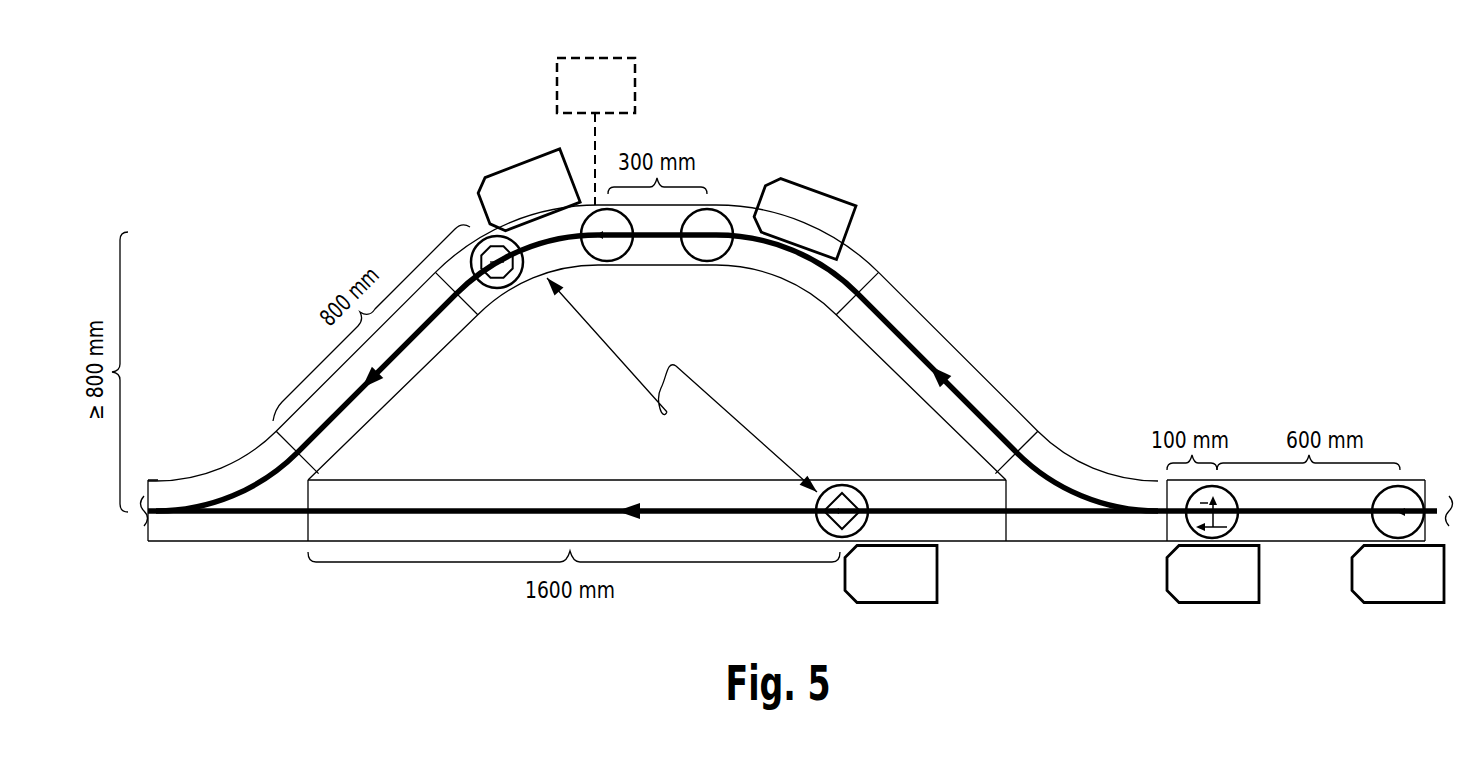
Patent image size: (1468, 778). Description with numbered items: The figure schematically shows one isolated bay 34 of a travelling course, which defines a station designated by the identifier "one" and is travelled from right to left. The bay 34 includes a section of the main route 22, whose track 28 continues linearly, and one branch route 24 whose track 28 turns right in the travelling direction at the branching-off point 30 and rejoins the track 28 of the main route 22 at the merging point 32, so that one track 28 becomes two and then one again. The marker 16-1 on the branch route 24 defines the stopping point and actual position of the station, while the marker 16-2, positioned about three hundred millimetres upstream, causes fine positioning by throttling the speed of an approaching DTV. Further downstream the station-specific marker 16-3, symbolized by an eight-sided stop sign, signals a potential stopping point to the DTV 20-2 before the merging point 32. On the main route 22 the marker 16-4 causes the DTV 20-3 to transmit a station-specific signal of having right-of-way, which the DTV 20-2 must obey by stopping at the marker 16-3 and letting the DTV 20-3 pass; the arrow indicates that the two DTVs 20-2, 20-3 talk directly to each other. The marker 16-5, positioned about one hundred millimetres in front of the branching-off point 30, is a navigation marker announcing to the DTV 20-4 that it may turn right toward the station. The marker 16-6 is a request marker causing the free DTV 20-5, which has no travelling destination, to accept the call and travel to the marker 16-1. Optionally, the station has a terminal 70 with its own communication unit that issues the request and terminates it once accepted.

The terminal 70 is at (582, 104).
The bay 34 is at (1008, 144).
The branch route 24 is at (966, 326).
The track 28 is at (812, 261).
The merging point 32 is at (176, 473).
The branching-off point 30 is at (1113, 538).
The main route 22 is at (410, 539).
The marker 16-1 is at (608, 262).
The marker 16-2 is at (708, 262).
The marker 16-3 is at (508, 288).
The marker 16-4 is at (842, 485).
The marker 16-5 is at (1190, 500).
The marker 16-6 is at (1407, 489).
The DTV 20-2 is at (527, 192).
The DTV 20-3 is at (843, 388).
The DTV 20-4 is at (1213, 574).
The DTV 20-5 is at (1398, 574).